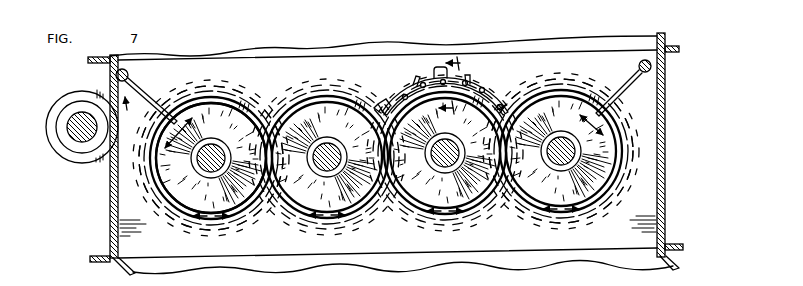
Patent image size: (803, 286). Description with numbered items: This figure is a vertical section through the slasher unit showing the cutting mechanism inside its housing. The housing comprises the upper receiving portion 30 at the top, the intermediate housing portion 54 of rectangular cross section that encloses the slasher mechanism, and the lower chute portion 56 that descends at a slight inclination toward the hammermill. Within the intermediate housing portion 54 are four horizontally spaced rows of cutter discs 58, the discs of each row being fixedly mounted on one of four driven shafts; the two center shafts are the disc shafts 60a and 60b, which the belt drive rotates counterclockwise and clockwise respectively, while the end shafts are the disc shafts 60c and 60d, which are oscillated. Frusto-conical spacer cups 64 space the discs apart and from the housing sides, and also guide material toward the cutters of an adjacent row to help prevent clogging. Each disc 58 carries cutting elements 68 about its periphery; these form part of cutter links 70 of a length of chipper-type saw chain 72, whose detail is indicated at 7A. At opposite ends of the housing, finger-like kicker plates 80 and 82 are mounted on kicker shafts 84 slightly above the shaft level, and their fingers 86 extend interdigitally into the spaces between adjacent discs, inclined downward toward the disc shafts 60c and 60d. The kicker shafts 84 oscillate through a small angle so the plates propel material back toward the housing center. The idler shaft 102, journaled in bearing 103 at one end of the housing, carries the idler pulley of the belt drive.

The upper receiving portion 30 is at (661, 37).
The intermediate housing portion 54 is at (666, 160).
The chute portion 56 is at (676, 266).
The cutter discs 58 is at (165, 218).
The disc shaft 60a is at (322, 150).
The disc shaft 60b is at (441, 165).
The disc shaft 60c is at (214, 152).
The disc shaft 60d is at (559, 160).
The frusto-conical spacer cups 64 is at (172, 190).
The cutting elements 68 is at (440, 67).
The cutter links 70 is at (472, 80).
The saw chain 72 is at (390, 96).
The section line 7A is at (463, 87).
The kicker plate 80 is at (360, 122).
The kicker plate 82 is at (618, 87).
The kicker shafts 84 is at (110, 76).
The fingers 86 is at (167, 118).
The idler shaft 102 is at (70, 118).
The bearing 103 is at (62, 150).